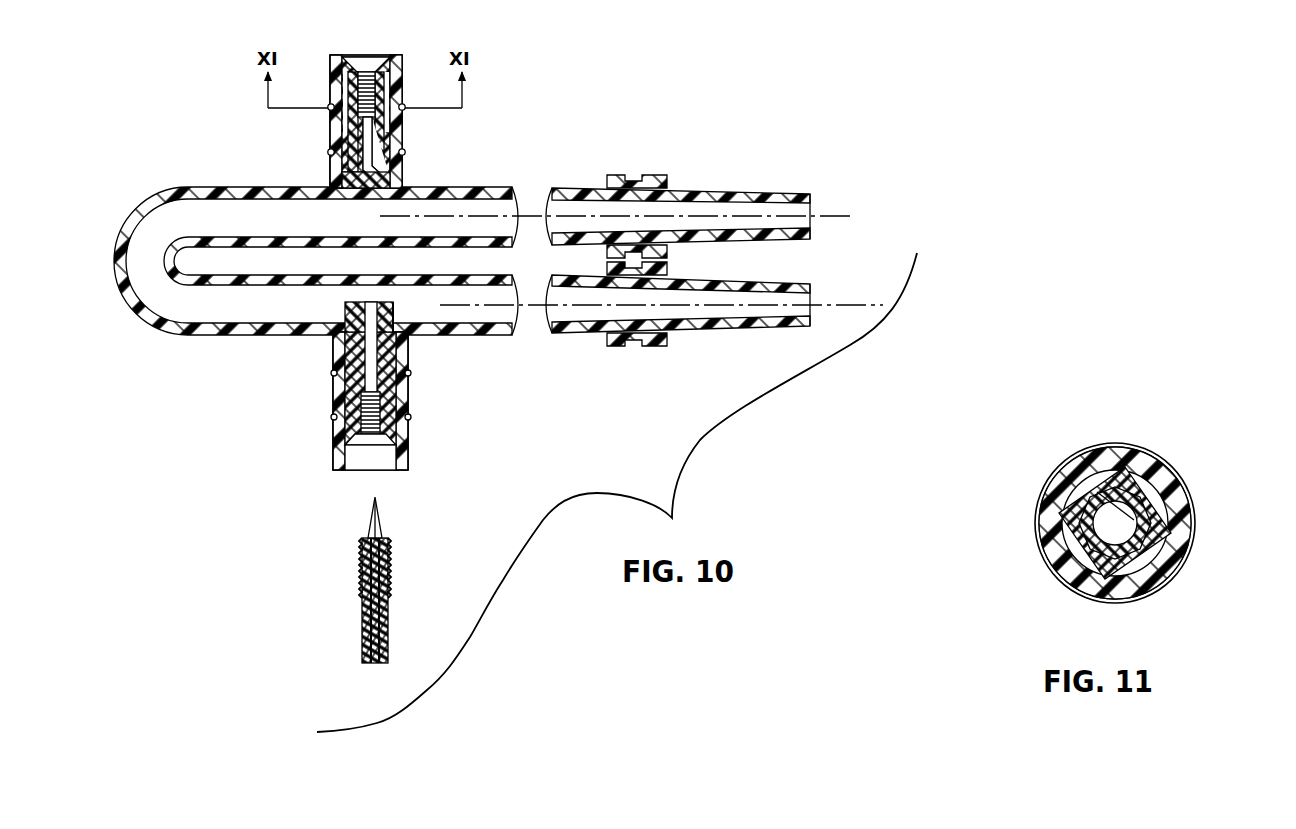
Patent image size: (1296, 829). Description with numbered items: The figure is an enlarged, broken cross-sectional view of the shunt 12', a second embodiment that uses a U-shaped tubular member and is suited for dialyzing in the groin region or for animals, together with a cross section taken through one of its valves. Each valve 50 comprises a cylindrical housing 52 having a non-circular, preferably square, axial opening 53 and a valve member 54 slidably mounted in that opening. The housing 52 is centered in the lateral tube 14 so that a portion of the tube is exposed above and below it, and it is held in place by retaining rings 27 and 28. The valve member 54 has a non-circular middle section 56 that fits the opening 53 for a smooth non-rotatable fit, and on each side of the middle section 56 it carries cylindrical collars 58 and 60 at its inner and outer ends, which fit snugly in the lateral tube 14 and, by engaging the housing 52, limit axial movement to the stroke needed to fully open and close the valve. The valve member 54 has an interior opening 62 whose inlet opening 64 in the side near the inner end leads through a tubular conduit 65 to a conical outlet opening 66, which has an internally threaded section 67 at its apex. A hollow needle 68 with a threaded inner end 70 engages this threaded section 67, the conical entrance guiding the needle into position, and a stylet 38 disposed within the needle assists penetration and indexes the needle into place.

In FIG. 10, the shunt 12' is at (316, 286).
In FIG. 10, the lateral tube 14 is at (403, 68).
In FIG. 11, the lateral tube 14 is at (1150, 588).
In FIG. 10, the retaining ring 27 is at (405, 109).
In FIG. 11, the retaining ring 27 is at (1182, 573).
In FIG. 10, the retaining ring 28 is at (406, 152).
In FIG. 10, the stylet 38 is at (379, 523).
In FIG. 10, the valve 50 is at (200, 140).
In FIG. 10, the cylindrical housing 52 is at (340, 138).
In FIG. 11, the cylindrical housing 52 is at (1165, 538).
In FIG. 11, the axial opening 53 is at (1137, 521).
In FIG. 11, the valve member 54 is at (1148, 519).
In FIG. 10, the middle section 56 is at (352, 130).
In FIG. 11, the middle section 56 is at (1118, 492).
In FIG. 10, the collar 58 is at (362, 192).
In FIG. 10, the collar 60 is at (355, 72).
In FIG. 10, the interior opening 62 is at (360, 165).
In FIG. 10, the inlet opening 64 is at (396, 311).
In FIG. 10, the tubular conduit 65 is at (378, 356).
In FIG. 10, the outlet opening 66 is at (388, 470).
In FIG. 10, the internally threaded section 67 is at (392, 407).
In FIG. 10, the hollow needle 68 is at (390, 614).
In FIG. 10, the threaded inner end 70 is at (388, 562).